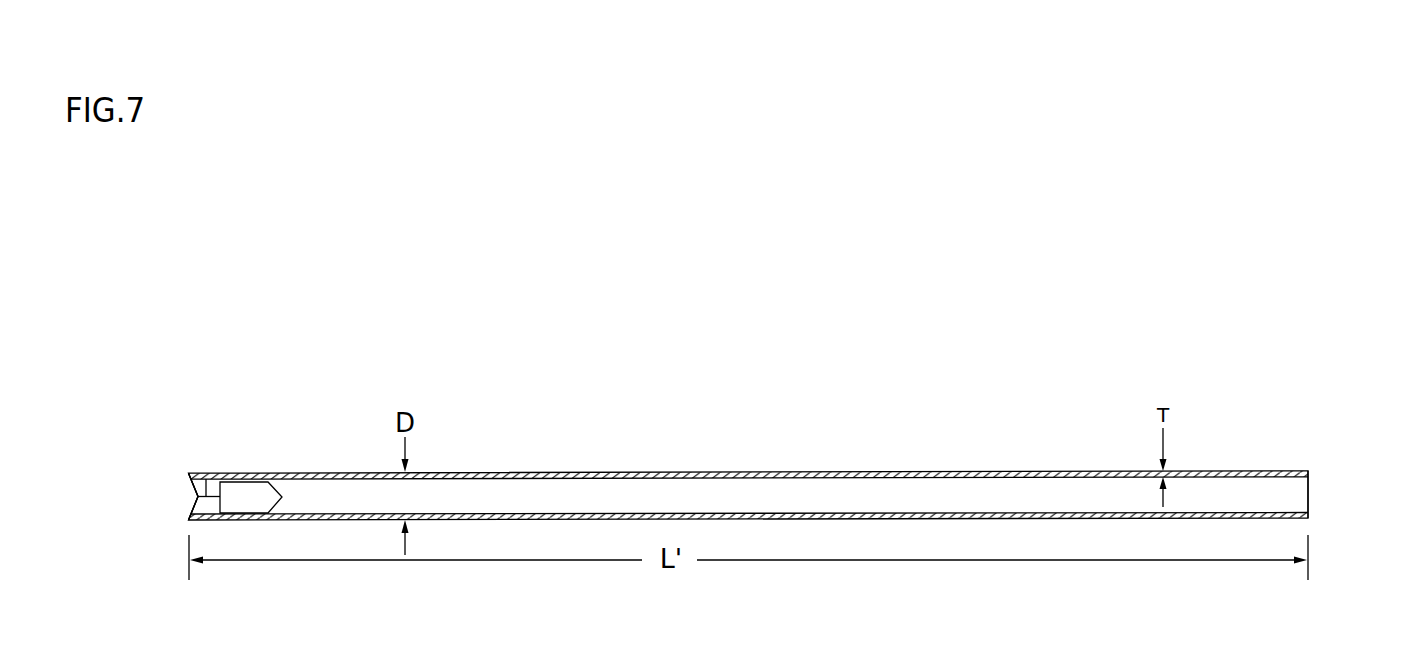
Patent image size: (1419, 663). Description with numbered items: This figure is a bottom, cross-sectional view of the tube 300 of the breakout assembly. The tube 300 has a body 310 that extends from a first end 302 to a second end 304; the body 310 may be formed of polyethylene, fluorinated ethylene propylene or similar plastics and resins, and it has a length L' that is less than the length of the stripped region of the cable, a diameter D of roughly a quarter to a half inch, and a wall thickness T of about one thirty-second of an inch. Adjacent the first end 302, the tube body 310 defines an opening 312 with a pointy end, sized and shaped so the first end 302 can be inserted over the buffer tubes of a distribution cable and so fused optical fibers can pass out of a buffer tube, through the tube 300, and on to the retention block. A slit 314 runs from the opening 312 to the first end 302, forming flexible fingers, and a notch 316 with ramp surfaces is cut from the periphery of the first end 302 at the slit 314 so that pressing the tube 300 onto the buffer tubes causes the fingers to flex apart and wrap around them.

The tube 300 is at (741, 448).
The first end 302 is at (171, 467).
The second end 304 is at (1331, 487).
The tube body 310 is at (737, 477).
The opening 312 is at (254, 499).
The slit 314 is at (206, 496).
The notch 316 is at (193, 497).